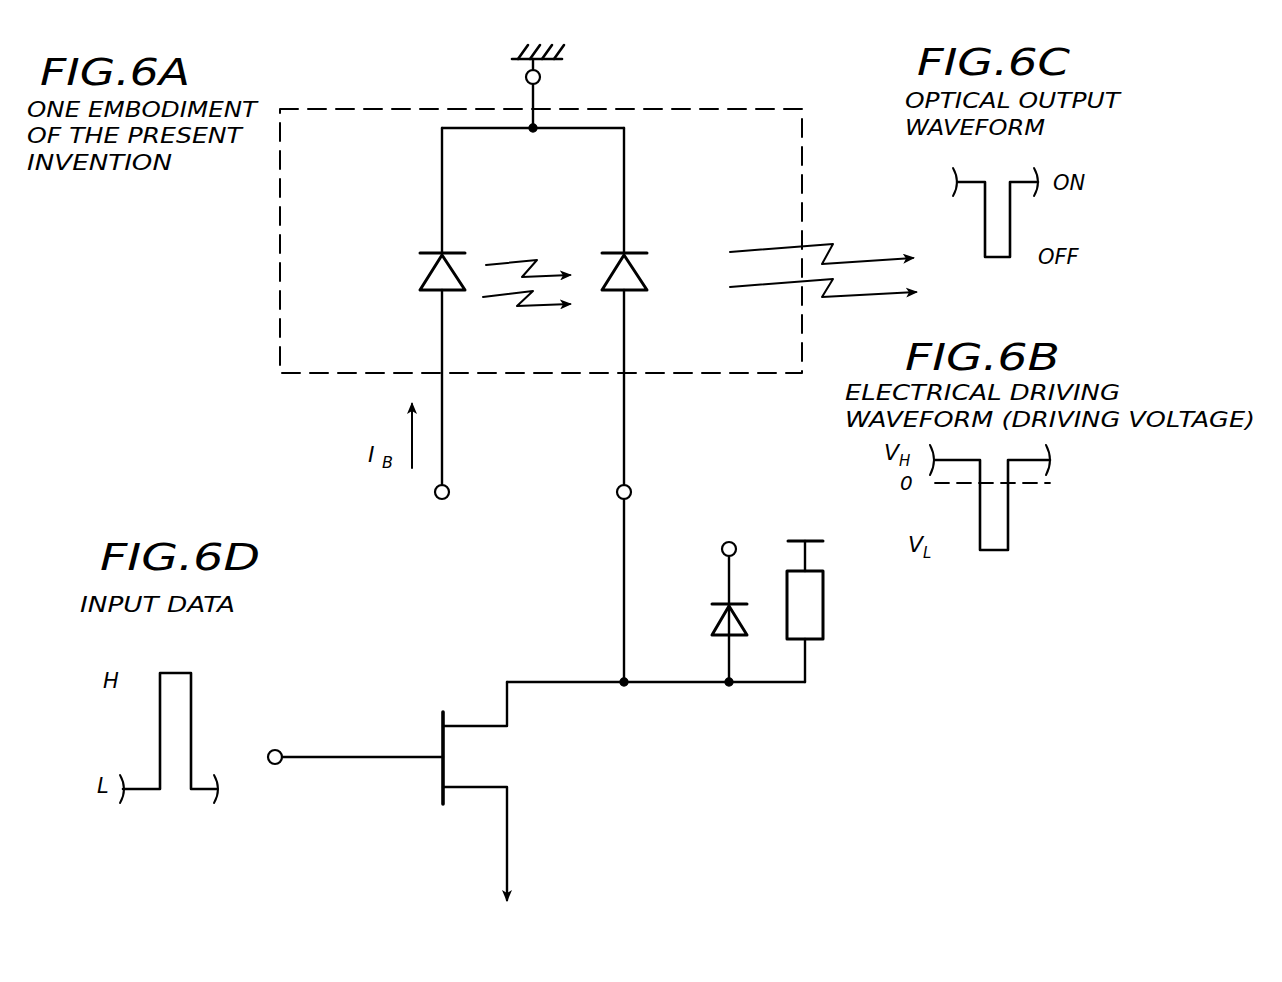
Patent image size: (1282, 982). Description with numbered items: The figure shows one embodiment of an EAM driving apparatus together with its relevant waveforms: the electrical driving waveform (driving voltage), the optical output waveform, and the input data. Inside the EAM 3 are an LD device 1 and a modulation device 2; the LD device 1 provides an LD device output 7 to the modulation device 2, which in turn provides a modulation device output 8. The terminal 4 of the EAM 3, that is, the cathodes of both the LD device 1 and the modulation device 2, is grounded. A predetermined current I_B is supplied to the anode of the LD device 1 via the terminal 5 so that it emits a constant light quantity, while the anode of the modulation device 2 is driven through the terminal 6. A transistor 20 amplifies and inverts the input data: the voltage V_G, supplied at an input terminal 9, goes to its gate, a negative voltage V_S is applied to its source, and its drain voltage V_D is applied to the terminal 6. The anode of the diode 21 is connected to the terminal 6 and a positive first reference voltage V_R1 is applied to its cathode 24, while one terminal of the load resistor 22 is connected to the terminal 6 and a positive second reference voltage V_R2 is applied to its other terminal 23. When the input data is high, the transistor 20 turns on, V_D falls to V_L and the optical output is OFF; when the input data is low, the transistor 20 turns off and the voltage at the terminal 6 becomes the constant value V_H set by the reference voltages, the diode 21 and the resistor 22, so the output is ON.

The LD device 1 is at (424, 295).
The modulation device 2 is at (617, 292).
The EAM 3 is at (683, 108).
The reference voltage terminal 4 is at (541, 80).
The bias terminal 5 is at (450, 490).
The driving terminal 6 is at (632, 490).
The LD device output 7 is at (520, 300).
The modulation device output 8 is at (772, 290).
The gate input terminal 9 is at (272, 764).
The transistor 20 is at (490, 755).
The diode 21 is at (735, 637).
The load resistor 22 is at (815, 642).
The terminal VR2 23 is at (813, 548).
The cathode of the diode 24 is at (721, 549).